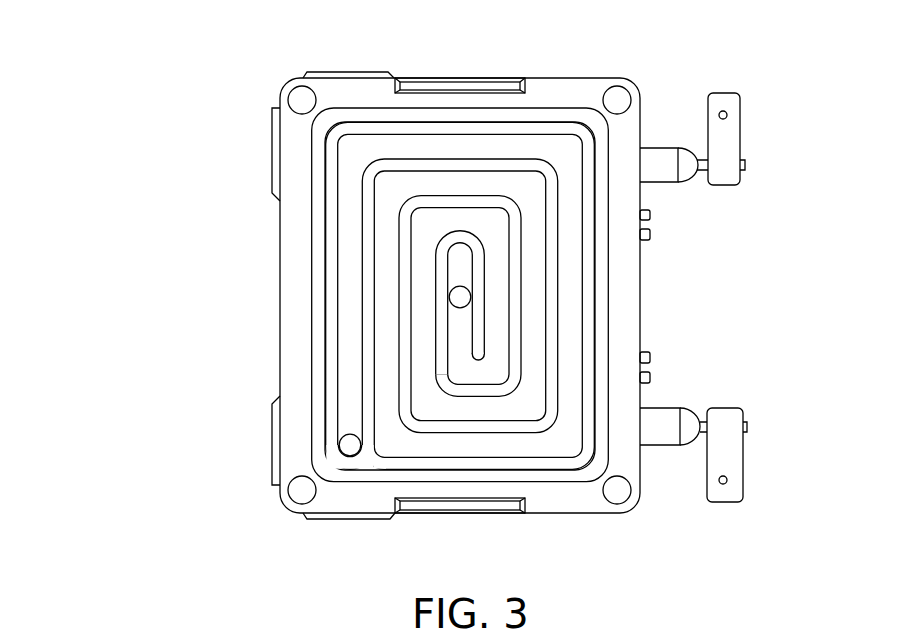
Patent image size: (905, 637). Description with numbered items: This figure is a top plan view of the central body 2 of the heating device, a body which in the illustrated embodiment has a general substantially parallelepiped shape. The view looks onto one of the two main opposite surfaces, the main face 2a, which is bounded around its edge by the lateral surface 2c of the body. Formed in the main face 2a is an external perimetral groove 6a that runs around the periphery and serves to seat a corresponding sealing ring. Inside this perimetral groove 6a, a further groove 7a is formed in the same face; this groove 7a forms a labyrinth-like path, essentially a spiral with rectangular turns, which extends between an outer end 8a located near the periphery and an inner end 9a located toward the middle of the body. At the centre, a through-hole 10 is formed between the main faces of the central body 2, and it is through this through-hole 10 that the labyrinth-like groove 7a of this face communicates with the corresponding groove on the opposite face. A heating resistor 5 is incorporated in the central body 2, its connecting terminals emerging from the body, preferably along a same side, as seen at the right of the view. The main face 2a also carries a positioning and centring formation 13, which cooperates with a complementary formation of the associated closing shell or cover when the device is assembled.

The central body 2 is at (233, 204).
The main face 2a is at (627, 297).
The lateral surface 2c is at (277, 206).
The heating resistor 5 is at (668, 152).
The external perimetral groove 6a is at (385, 145).
The groove 7a is at (458, 222).
The outer end 8a is at (342, 452).
The inner end 9a is at (470, 250).
The through-hole 10 is at (452, 296).
The positioning and centring formation 13 is at (500, 78).